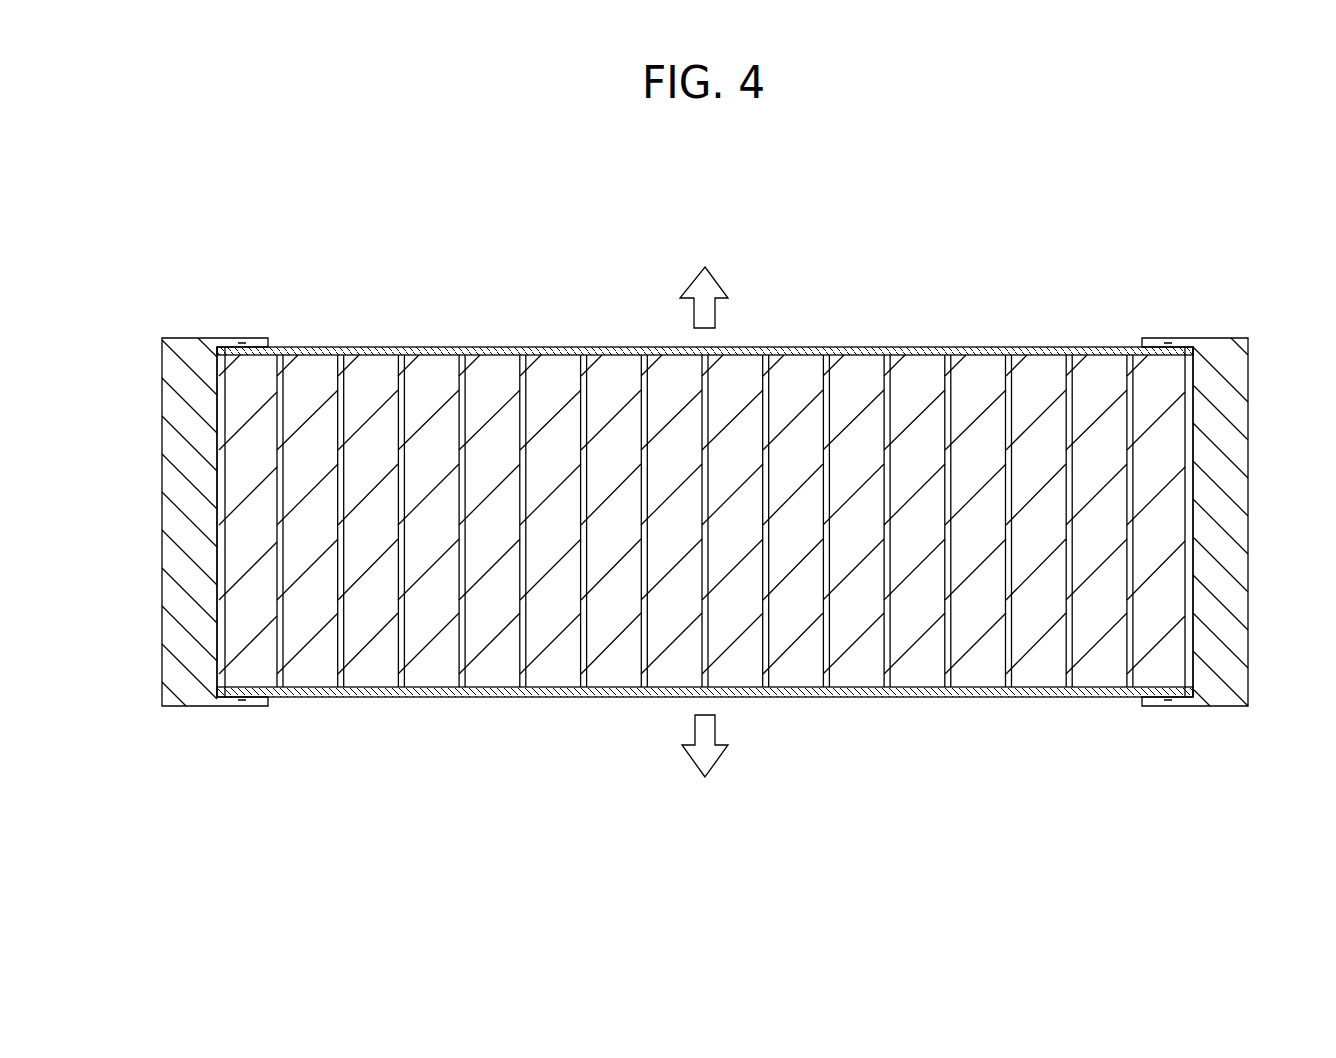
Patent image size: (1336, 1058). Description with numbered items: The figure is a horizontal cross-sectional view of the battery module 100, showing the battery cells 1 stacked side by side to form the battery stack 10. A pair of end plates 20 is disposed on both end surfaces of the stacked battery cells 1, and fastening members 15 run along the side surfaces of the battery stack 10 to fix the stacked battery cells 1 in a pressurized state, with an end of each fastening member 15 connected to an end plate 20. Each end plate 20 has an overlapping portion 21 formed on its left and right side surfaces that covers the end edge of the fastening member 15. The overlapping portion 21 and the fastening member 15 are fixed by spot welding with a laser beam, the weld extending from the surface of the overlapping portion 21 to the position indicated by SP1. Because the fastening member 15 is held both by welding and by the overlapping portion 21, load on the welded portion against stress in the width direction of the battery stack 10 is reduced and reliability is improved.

The battery module 100 is at (1030, 209).
The battery cell 1 is at (1075, 826).
The battery stack 10 is at (702, 621).
The fastening member 15 is at (505, 347).
The end plate 20 is at (134, 638).
The overlapping portion 21 is at (250, 342).
The welding position SP1 is at (242, 342).